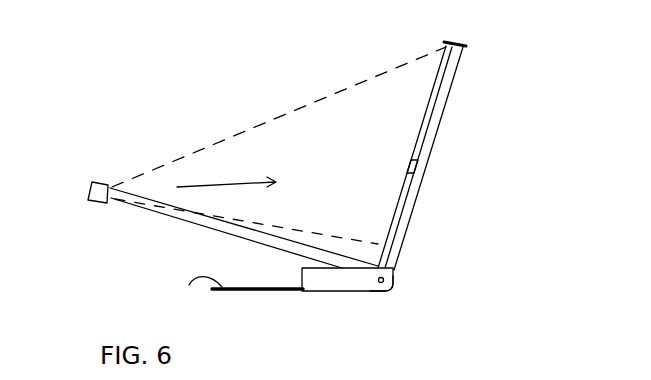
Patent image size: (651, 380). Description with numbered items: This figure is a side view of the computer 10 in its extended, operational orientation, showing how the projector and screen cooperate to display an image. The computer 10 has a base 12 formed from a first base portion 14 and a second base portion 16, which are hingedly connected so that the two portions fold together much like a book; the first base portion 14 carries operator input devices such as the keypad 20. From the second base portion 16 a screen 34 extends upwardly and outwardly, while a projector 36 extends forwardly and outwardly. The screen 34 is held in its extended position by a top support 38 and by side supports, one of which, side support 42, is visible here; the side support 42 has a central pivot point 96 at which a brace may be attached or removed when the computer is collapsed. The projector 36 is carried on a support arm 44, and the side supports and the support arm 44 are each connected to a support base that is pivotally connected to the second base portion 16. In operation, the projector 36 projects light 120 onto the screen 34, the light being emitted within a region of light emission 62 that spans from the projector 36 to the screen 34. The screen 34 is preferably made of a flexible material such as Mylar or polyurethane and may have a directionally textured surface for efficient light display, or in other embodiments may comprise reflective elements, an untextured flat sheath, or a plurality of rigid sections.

The computer 10 is at (511, 78).
The base 12 is at (323, 288).
The first base portion 14 is at (272, 292).
The second base portion 16 is at (355, 290).
The keypad 20 is at (186, 291).
The screen 34 is at (438, 128).
The projector 36 is at (97, 190).
The top support 38 is at (457, 40).
The side support 42 is at (407, 190).
The support arm 44 is at (255, 233).
The region of light emission 62 is at (322, 98).
The central pivot point 96 is at (417, 156).
The light 120 is at (240, 178).